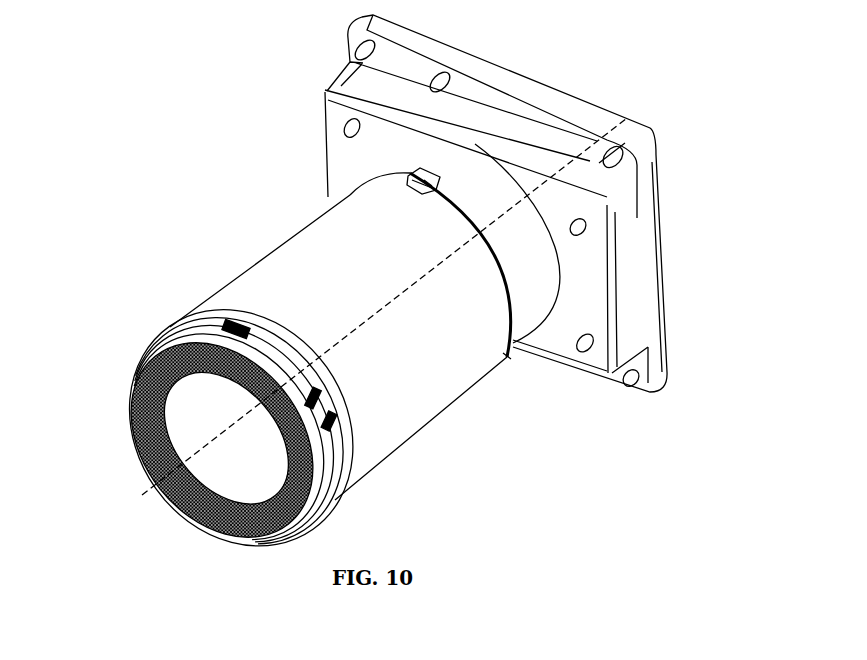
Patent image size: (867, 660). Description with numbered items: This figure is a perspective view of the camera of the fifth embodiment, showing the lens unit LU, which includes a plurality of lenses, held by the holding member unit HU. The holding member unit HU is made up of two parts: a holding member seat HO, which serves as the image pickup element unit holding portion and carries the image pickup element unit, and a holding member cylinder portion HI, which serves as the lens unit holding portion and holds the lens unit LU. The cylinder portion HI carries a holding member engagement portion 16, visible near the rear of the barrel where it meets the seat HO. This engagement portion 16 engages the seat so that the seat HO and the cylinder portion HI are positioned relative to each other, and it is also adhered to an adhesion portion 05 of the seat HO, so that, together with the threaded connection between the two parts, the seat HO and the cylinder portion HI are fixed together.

The adhesion portion 05 is at (428, 181).
The holding member engagement portion 16 is at (413, 171).
The holding member unit HU is at (293, 192).
The lens unit LU is at (152, 333).
The holding member cylinder portion HI is at (423, 387).
The holding member seat HO is at (643, 290).